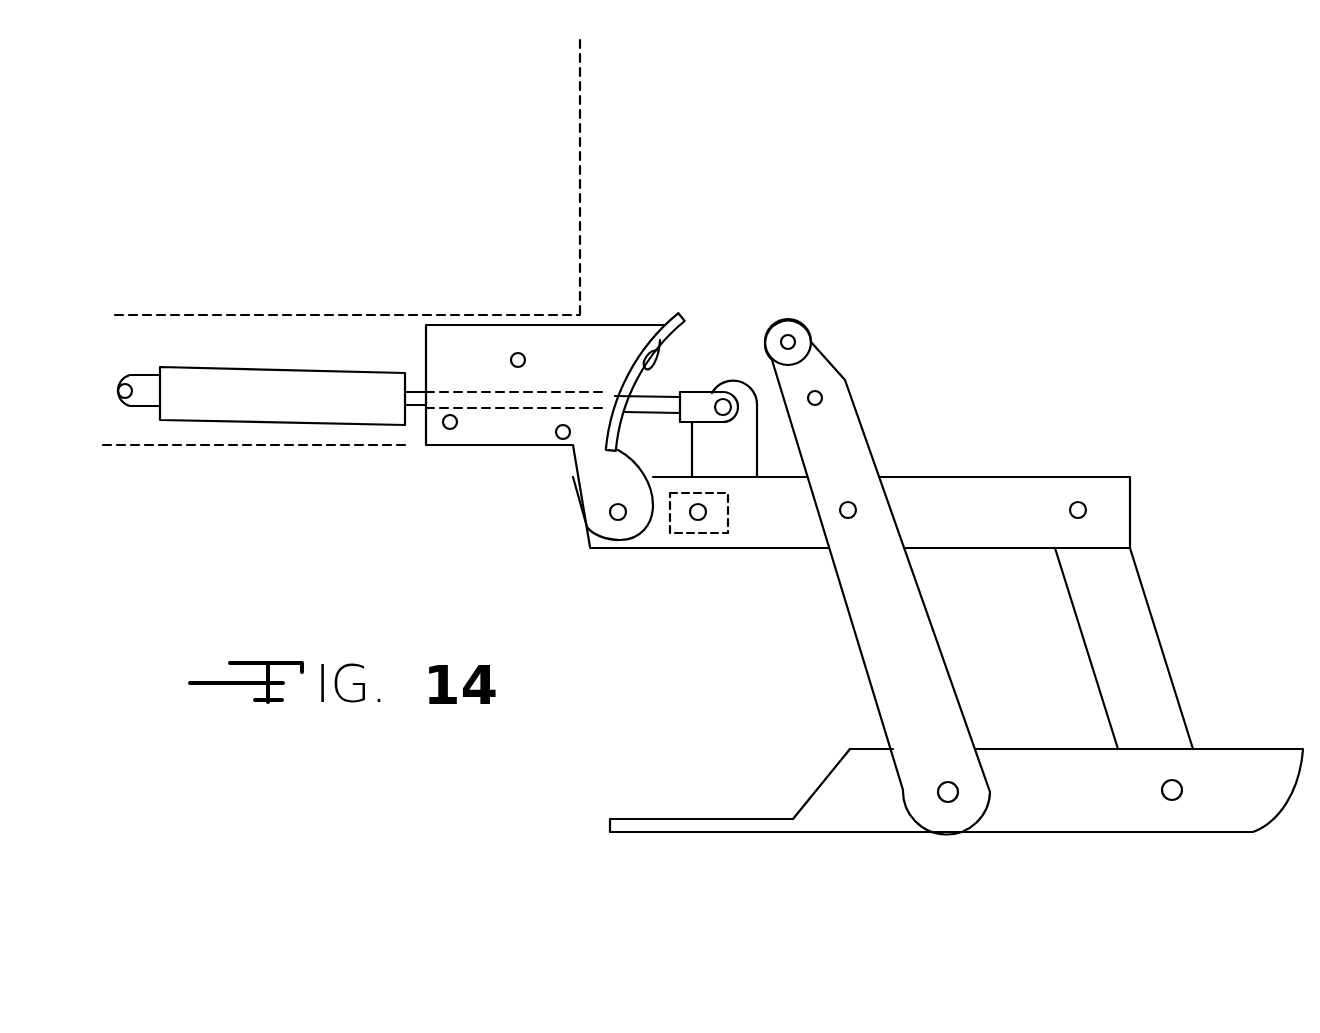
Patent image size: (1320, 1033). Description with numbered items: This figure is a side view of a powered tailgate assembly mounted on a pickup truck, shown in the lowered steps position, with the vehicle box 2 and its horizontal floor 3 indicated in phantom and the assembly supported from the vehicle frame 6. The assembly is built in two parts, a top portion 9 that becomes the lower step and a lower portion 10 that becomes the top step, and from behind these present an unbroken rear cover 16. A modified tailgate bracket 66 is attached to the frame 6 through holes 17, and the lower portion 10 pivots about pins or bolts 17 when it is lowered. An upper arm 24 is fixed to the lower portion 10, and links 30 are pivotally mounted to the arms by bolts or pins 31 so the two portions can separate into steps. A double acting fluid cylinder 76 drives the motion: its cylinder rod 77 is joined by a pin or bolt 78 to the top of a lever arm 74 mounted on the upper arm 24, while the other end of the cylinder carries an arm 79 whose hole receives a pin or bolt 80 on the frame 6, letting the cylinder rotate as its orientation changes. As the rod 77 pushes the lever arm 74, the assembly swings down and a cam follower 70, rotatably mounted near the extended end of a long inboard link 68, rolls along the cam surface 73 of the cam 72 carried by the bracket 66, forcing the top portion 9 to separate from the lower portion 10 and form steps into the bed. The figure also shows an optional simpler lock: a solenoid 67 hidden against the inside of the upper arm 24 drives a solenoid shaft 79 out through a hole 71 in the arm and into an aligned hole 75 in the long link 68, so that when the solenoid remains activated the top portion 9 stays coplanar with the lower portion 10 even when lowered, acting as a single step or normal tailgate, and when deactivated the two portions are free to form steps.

The box 2 is at (452, 140).
The horizontal floor 3 is at (292, 292).
The frame 6 is at (238, 428).
The top portion 9 is at (1082, 805).
The lower portion 10 is at (990, 497).
The rear cover 16 is at (713, 828).
The pins or bolts 17 is at (617, 525).
The upper arm 24 is at (950, 530).
The links 30 is at (1150, 672).
The bolt or pin 31 is at (857, 508).
The modified tailgate bracket 66 is at (567, 353).
The solenoid 67 is at (677, 527).
The long inboard link 68 is at (858, 616).
The cam follower 70 is at (806, 328).
The hole 71 is at (785, 335).
The cam 72 is at (660, 340).
The cam surface 73 is at (653, 328).
The lever arm 74 is at (727, 458).
The hole 75 is at (823, 397).
The fluid cylinder 76 is at (327, 403).
The cylinder rod 77 is at (697, 407).
The pin or bolt 78 is at (740, 378).
The arm 79 is at (148, 386).
The pin or bolt 80 is at (125, 399).